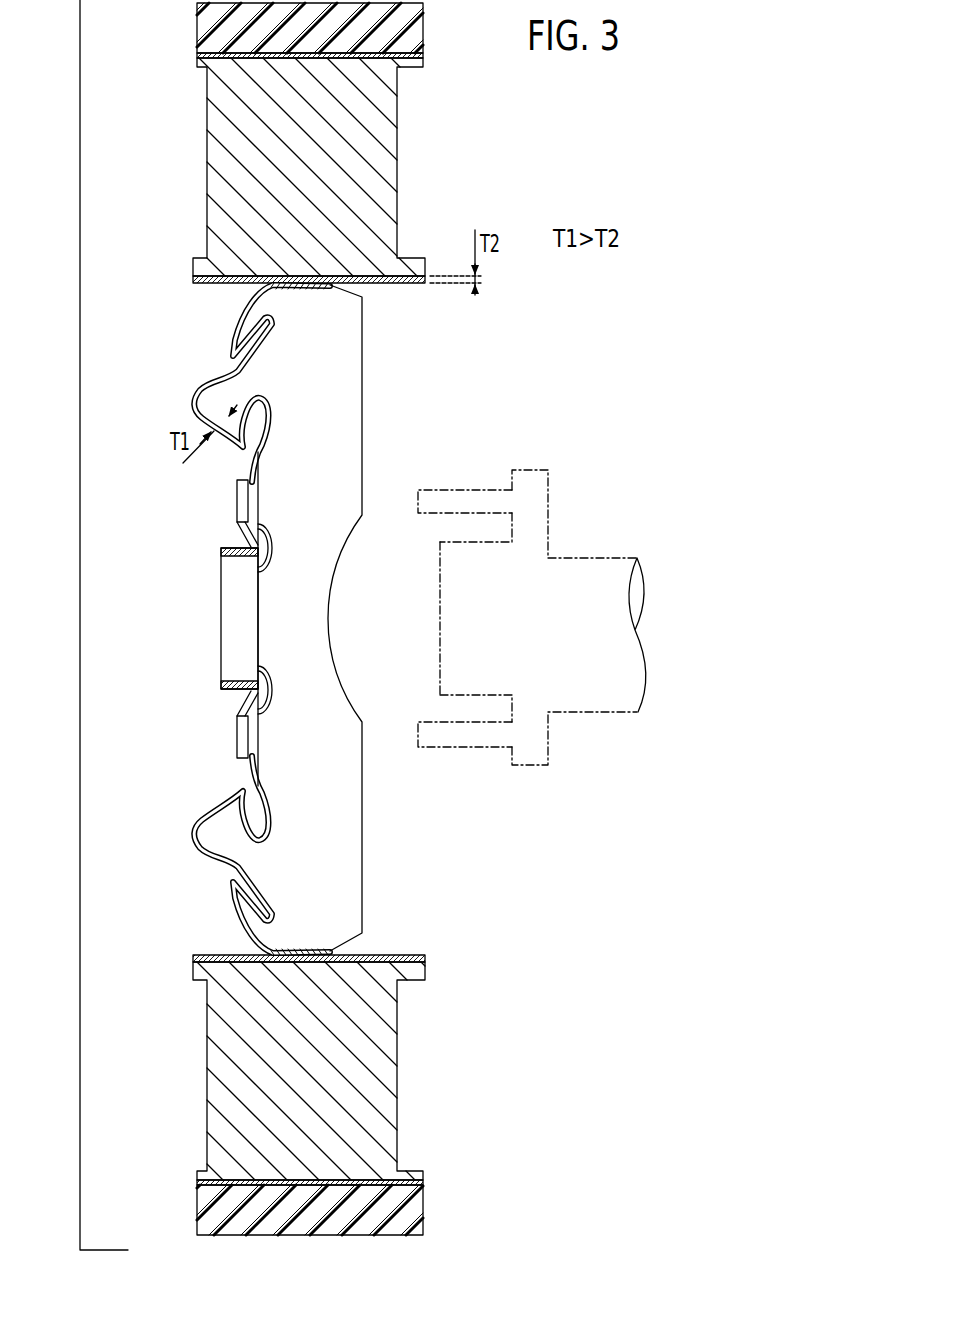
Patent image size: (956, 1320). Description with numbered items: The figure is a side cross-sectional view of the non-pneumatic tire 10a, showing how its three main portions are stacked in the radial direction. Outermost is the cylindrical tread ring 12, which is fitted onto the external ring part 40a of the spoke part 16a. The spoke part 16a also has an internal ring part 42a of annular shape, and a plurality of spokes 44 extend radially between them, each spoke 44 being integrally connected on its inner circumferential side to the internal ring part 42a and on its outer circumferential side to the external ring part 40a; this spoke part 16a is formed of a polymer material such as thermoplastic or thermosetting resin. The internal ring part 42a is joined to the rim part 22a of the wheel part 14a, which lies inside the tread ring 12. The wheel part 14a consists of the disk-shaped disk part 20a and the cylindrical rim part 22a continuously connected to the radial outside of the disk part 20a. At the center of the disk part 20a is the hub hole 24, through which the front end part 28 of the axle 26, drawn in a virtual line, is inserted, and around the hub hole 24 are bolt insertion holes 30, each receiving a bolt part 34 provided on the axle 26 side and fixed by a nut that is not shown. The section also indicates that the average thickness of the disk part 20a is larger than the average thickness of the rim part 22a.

The non-pneumatic tire 10a is at (657, 111).
The tread ring 12 is at (207, 30).
The external ring part 40a is at (200, 57).
The spoke part 16a is at (397, 137).
The spokes 44 is at (220, 147).
The internal ring part 42a is at (200, 264).
The rim part 22a is at (408, 954).
The wheel part 14a is at (193, 376).
The disk part 20a is at (340, 394).
The bolt insertion holes 30 is at (240, 502).
The hub hole 24 is at (233, 605).
The axle 26 is at (587, 551).
The front end part 28 is at (452, 606).
The bolt part 34 is at (466, 497).